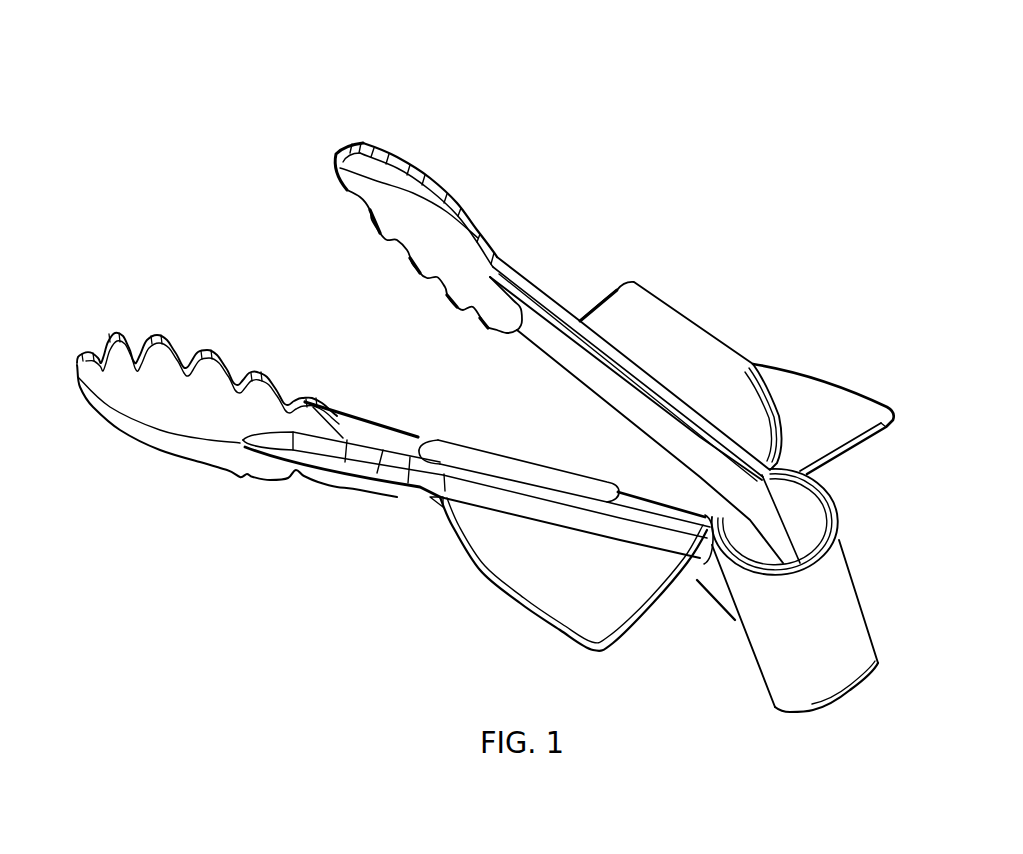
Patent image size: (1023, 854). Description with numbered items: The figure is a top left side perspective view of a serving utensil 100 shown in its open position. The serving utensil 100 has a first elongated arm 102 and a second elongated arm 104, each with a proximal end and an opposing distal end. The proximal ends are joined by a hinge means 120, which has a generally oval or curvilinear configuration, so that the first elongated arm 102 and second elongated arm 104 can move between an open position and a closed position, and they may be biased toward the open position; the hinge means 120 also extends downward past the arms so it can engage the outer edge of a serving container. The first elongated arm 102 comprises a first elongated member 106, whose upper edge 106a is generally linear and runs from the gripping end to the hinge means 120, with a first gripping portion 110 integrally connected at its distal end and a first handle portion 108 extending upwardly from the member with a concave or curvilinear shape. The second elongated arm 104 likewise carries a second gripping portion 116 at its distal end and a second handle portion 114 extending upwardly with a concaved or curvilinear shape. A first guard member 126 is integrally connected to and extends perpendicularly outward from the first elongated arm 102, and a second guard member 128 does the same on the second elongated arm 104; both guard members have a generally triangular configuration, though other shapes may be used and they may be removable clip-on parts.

The serving utensil 100 is at (597, 130).
The first elongated arm 102 is at (581, 322).
The second elongated arm 104 is at (355, 413).
The first elongated member 106 is at (523, 309).
The upper edge 106a is at (548, 326).
The first handle portion 108 is at (672, 333).
The first gripping portion 110 is at (395, 213).
The second handle portion 114 is at (510, 472).
The second gripping portion 116 is at (128, 377).
The hinge means 120 is at (851, 651).
The first guard member 126 is at (848, 421).
The second guard member 128 is at (598, 613).